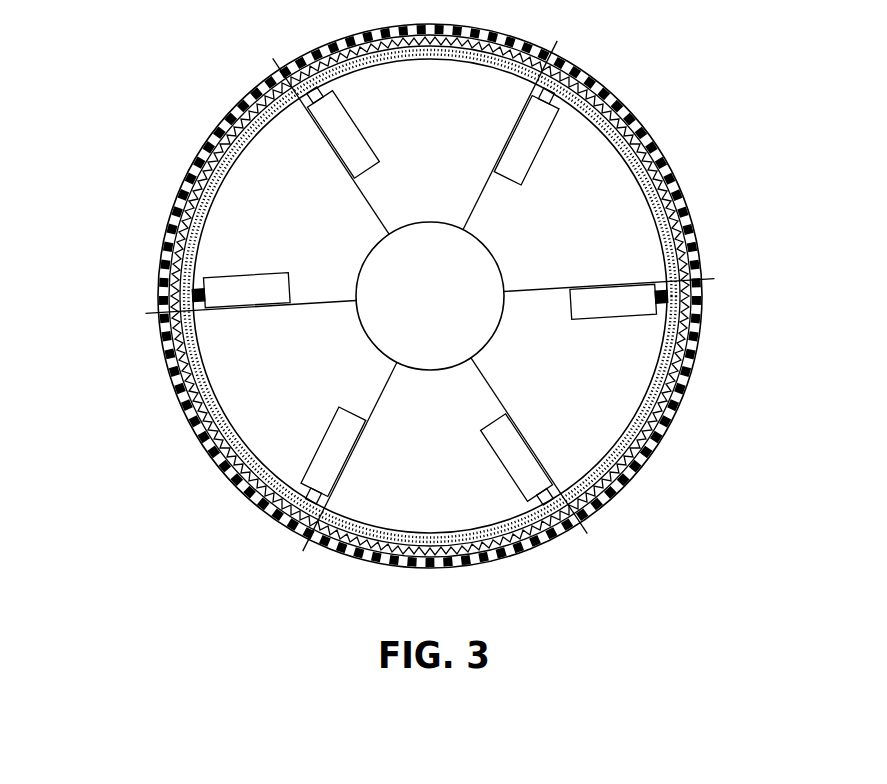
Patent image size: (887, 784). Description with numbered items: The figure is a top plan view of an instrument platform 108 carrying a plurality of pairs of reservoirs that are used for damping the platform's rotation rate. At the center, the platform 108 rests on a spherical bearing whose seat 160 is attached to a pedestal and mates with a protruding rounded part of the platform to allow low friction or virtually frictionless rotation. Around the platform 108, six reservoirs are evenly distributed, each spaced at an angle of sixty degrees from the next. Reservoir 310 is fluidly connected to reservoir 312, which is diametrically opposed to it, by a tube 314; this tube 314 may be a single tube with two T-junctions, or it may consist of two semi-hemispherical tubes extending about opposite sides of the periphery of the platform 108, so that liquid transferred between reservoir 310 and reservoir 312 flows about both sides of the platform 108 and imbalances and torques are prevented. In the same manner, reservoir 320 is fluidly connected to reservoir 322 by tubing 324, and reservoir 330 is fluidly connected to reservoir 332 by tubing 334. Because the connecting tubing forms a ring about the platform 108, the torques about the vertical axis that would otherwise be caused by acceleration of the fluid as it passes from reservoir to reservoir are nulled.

The instrument platform 108 is at (238, 380).
The seat 160 is at (153, 315).
The reservoir 310 is at (510, 470).
The reservoir 312 is at (348, 138).
The tube 314 is at (588, 510).
The reservoir 320 is at (239, 283).
The reservoir 322 is at (608, 298).
The tubing 324 is at (682, 392).
The reservoir 330 is at (332, 447).
The reservoir 332 is at (523, 153).
The tubing 334 is at (637, 467).